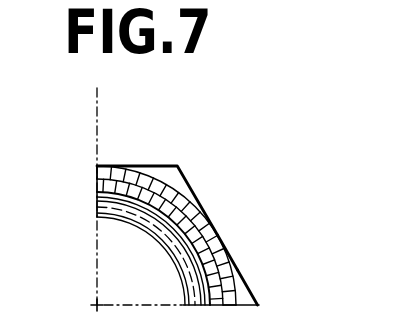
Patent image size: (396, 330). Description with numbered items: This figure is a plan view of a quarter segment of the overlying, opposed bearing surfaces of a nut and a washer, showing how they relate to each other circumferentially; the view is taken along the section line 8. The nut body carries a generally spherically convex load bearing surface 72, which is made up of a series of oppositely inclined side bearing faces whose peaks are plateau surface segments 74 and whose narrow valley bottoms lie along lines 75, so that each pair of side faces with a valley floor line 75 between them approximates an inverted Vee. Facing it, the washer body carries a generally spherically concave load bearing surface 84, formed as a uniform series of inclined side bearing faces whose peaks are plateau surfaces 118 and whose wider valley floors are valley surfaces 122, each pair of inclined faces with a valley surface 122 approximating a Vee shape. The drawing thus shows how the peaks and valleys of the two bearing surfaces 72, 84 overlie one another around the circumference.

The section line 8- 8 is at (82, 127).
The generally spherically convex load bearing surface 72 is at (181, 168).
The plateau surface segments 74 is at (187, 181).
The generally spherically concave load bearing surface 84 is at (205, 216).
The valley floor lines 75 is at (174, 166).
The valley surfaces 122 is at (134, 192).
The plateau surfaces 118 is at (98, 212).